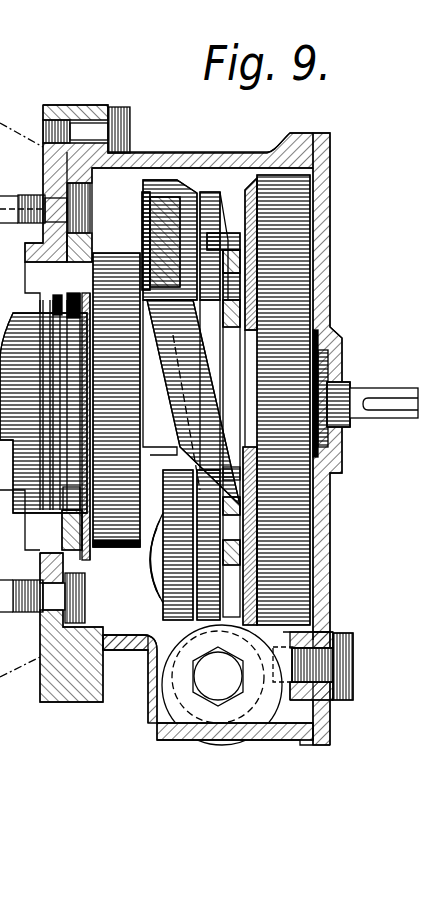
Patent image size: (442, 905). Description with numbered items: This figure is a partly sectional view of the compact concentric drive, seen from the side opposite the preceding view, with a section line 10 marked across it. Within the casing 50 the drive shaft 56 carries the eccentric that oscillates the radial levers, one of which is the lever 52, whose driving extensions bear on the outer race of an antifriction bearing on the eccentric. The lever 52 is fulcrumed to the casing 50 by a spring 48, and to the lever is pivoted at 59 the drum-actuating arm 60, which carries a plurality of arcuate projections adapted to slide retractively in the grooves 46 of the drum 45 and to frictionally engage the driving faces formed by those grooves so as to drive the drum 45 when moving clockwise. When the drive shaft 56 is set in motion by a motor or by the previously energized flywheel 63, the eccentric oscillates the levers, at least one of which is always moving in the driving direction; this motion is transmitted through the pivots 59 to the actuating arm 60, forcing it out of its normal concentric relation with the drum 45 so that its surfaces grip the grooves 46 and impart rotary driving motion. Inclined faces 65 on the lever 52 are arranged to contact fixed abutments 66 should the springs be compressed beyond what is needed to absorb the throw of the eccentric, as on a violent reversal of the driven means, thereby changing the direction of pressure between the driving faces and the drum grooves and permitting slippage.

The section line 10 is at (158, 290).
The drum 45 is at (152, 218).
The grooves 46 is at (148, 241).
The spring 48 is at (185, 680).
The casing 50 is at (187, 728).
The radial lever 52 is at (227, 498).
The drive shaft 56 is at (352, 392).
The pivots 59 is at (230, 278).
The actuating arm 60 is at (180, 182).
The flywheel 63 is at (303, 222).
The inclined faces 65 is at (248, 727).
The fixed abutments 66 is at (283, 648).